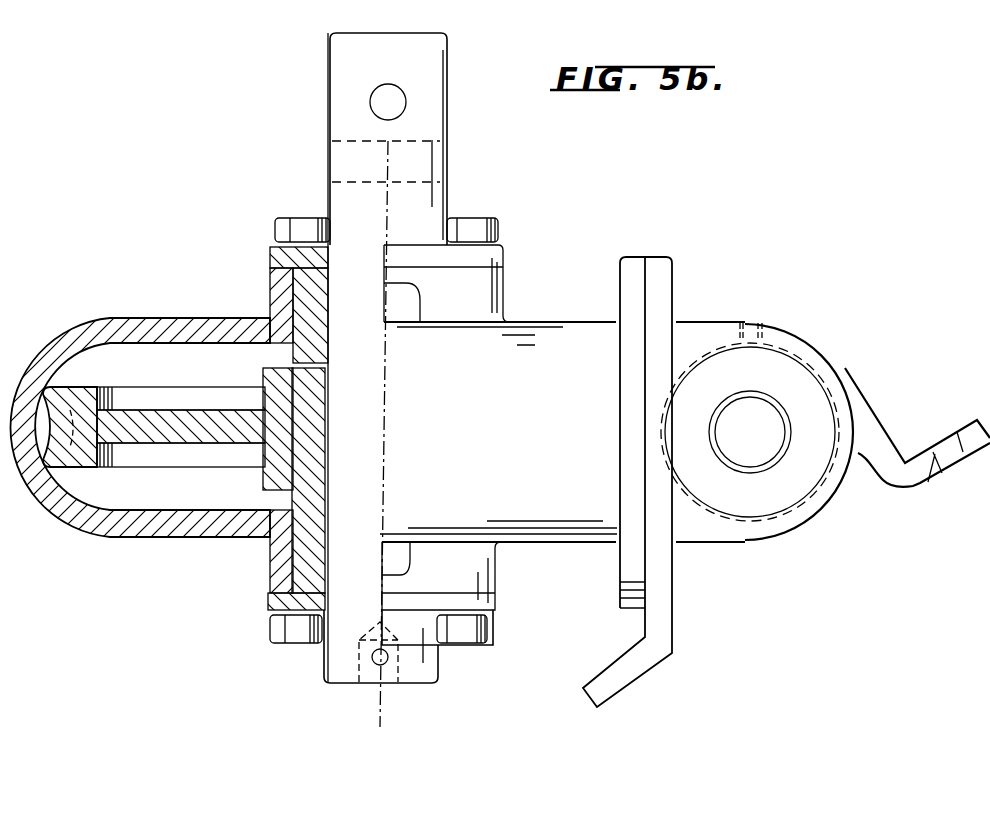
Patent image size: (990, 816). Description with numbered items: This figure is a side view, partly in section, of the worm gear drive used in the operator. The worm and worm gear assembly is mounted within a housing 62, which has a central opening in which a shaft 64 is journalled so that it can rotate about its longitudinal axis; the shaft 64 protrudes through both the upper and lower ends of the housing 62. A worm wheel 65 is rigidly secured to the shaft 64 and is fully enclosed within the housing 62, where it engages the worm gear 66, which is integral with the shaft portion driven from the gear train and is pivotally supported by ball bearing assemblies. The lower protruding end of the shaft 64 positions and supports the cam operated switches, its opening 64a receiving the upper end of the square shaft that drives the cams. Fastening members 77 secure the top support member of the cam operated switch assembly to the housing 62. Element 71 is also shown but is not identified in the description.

The housing 62 is at (155, 318).
The shaft 64 is at (330, 108).
The opening 64a is at (370, 670).
The worm wheel 65 is at (190, 412).
The worm gear 66 is at (785, 410).
The lever arm 71 is at (932, 480).
The fastening members 77 is at (267, 633).